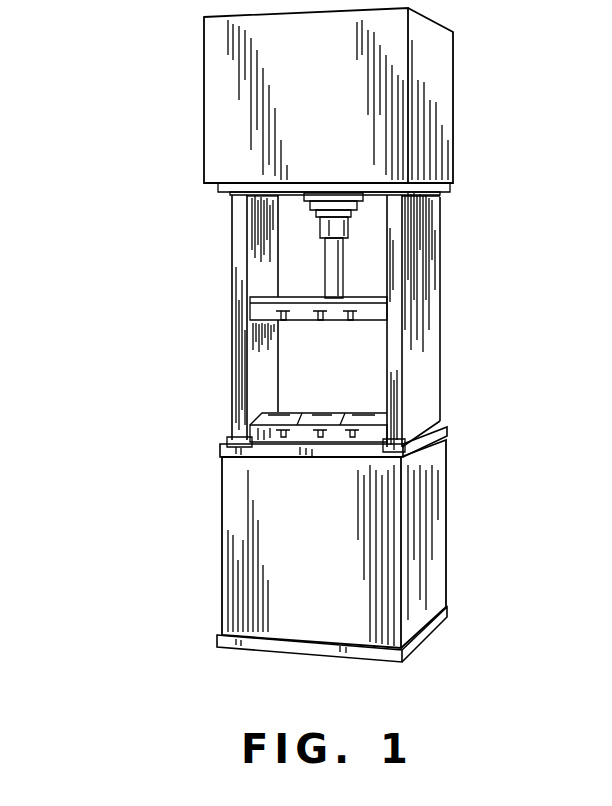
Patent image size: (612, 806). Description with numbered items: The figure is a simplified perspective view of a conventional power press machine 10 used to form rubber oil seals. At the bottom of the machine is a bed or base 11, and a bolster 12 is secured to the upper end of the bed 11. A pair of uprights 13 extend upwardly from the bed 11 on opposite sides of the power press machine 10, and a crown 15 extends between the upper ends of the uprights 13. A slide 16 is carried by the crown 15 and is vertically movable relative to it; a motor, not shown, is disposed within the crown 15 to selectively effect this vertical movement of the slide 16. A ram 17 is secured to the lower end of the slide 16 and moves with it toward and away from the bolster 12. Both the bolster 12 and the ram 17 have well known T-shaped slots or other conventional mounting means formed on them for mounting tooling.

The power press machine 10 is at (109, 229).
The bed 11 is at (435, 512).
The bolster 12 is at (260, 428).
The uprights 13 is at (237, 245).
The crown 15 is at (448, 104).
The slide 16 is at (341, 251).
The ram 17 is at (371, 322).